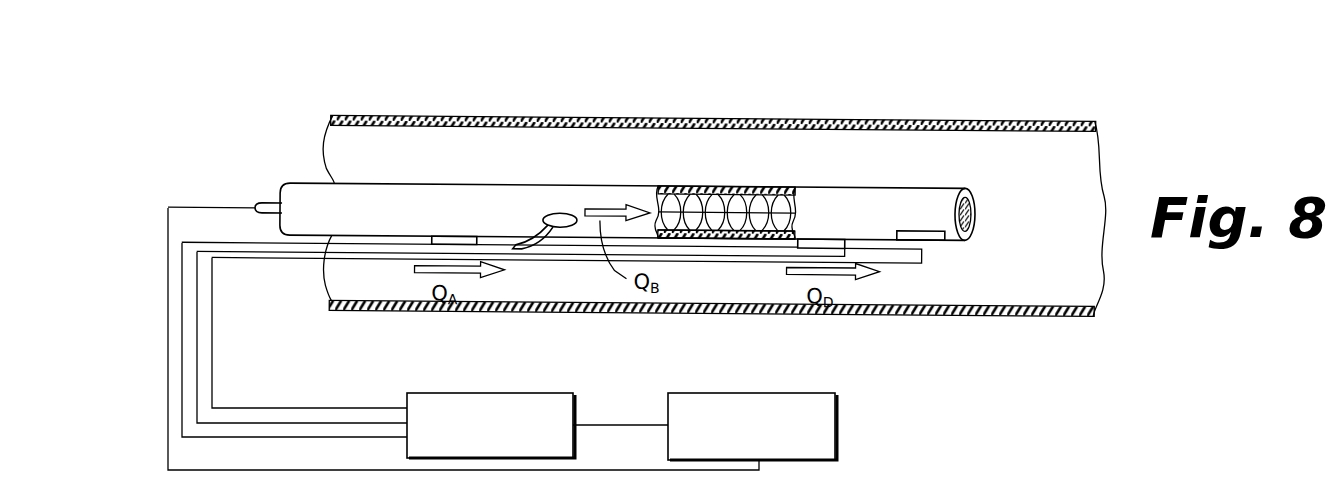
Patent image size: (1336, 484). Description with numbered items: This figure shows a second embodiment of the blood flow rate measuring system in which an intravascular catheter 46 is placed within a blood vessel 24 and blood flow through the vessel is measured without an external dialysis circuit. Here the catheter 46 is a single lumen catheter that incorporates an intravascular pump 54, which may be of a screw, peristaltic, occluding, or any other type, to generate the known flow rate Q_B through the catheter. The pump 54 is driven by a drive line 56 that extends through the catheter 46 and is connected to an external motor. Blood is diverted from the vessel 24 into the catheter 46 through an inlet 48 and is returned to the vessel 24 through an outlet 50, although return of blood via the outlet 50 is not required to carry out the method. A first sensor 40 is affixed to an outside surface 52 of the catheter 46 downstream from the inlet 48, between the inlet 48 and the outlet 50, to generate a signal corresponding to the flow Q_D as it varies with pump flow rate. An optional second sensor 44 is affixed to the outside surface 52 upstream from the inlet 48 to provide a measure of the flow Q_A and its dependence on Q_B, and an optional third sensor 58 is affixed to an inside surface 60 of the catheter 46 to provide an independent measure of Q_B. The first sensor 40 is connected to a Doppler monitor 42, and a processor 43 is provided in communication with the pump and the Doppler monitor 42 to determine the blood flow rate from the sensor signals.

The vessel 24 is at (365, 301).
The first sensor 40 is at (830, 240).
The Doppler monitor 42 is at (450, 393).
The processor 43 is at (838, 428).
The second sensor 44 is at (462, 243).
The intravascular catheter 46 is at (624, 186).
The inlet 48 is at (557, 226).
The outlet 50 is at (973, 190).
The outside surface 52 is at (546, 186).
The intravascular pump 54 is at (751, 238).
The drive line 56 is at (268, 203).
The third sensor 58 is at (912, 228).
The inside surface 60 is at (977, 241).